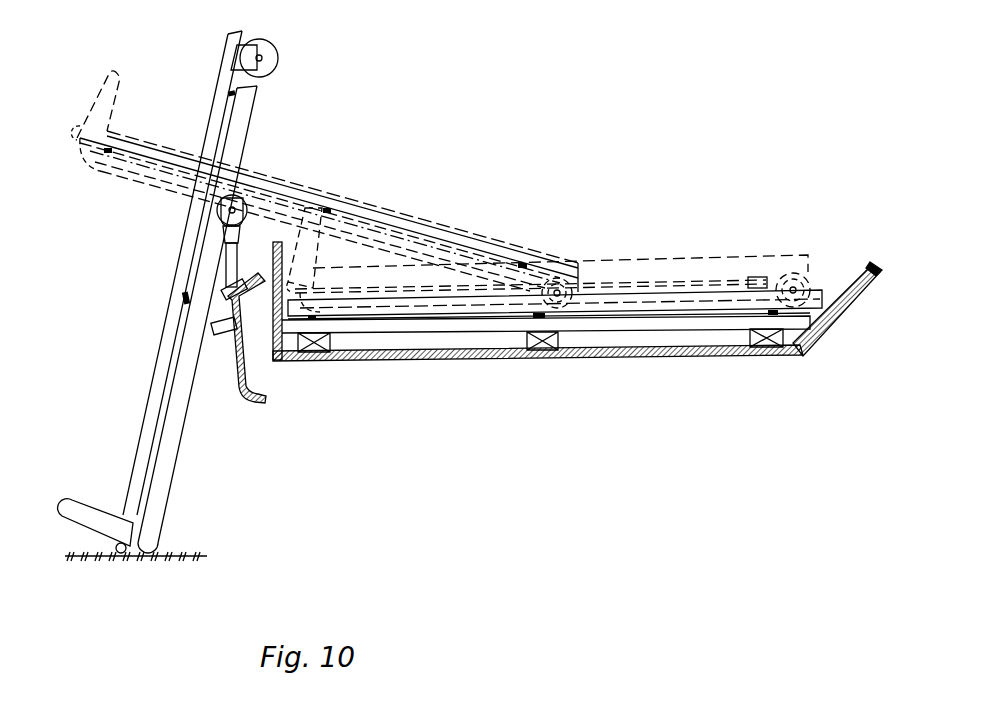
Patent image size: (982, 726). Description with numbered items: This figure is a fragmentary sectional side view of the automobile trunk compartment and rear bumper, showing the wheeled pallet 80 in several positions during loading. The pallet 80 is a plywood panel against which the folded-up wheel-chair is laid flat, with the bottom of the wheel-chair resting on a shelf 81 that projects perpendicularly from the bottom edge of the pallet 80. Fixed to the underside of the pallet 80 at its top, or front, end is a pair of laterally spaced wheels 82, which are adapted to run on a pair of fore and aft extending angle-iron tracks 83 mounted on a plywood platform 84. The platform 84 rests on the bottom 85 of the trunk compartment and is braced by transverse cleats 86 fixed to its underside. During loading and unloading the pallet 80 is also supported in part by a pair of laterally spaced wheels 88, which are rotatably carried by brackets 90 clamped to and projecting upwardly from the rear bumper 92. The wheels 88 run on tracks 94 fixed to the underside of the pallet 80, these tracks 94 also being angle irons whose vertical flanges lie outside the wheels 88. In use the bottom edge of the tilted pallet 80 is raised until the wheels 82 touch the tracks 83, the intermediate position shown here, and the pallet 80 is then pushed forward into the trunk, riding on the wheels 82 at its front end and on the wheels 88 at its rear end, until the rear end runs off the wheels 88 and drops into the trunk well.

The pallet 80 is at (165, 333).
The shelf 81 is at (77, 505).
The wheels 82 is at (253, 43).
The tracks 83 is at (718, 303).
The platform 84 is at (640, 320).
The bottom of the trunk compartment 85 is at (453, 357).
The transverse cleats 86 is at (315, 357).
The wheels 88 is at (237, 203).
The brackets 90 is at (233, 252).
The rear bumper 92 is at (237, 360).
The tracks 94 is at (240, 140).